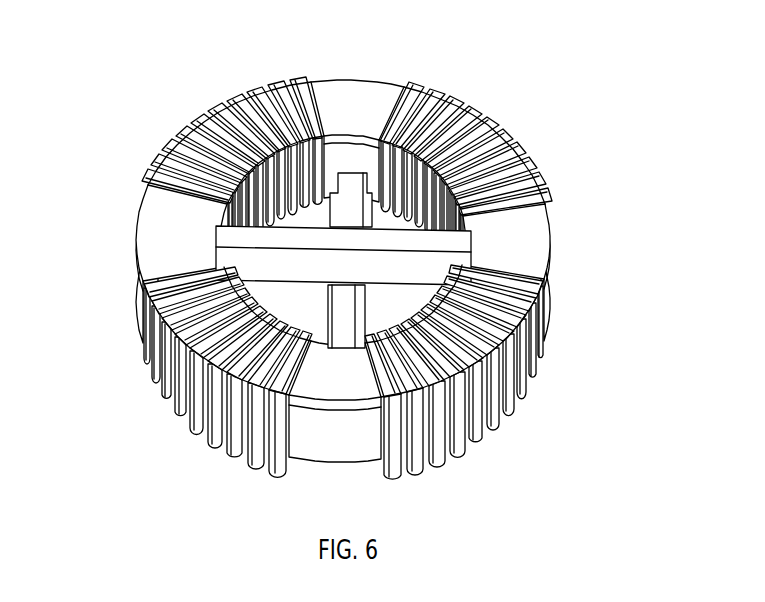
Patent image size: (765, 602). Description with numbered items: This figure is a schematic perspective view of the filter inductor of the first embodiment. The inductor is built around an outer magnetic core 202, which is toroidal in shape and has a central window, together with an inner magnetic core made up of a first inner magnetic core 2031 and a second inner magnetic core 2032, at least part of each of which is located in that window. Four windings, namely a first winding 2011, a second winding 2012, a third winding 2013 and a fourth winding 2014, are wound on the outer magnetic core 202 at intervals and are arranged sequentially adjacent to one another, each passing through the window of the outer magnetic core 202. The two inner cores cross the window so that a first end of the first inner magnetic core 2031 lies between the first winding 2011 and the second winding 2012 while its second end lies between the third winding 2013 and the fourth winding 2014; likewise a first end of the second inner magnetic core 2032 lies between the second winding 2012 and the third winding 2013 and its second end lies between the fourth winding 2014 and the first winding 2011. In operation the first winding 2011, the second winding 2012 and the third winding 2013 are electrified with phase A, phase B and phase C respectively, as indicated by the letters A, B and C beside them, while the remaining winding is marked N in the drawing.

The first winding 2011 is at (222, 173).
The second winding 2012 is at (503, 140).
The third winding 2013 is at (468, 387).
The fourth winding 2014 is at (175, 352).
The outer magnetic core 202 is at (157, 232).
The first inner magnetic core 2031 is at (353, 200).
The second inner magnetic core 2032 is at (444, 247).
The phase A is at (577, 372).
The phase B is at (496, 75).
The phase C is at (218, 113).
The neutral terminal N is at (190, 461).